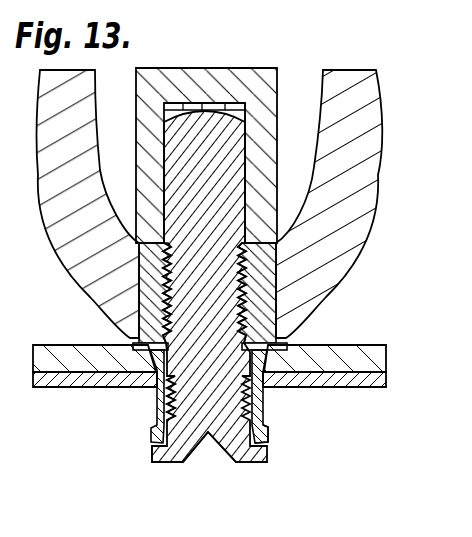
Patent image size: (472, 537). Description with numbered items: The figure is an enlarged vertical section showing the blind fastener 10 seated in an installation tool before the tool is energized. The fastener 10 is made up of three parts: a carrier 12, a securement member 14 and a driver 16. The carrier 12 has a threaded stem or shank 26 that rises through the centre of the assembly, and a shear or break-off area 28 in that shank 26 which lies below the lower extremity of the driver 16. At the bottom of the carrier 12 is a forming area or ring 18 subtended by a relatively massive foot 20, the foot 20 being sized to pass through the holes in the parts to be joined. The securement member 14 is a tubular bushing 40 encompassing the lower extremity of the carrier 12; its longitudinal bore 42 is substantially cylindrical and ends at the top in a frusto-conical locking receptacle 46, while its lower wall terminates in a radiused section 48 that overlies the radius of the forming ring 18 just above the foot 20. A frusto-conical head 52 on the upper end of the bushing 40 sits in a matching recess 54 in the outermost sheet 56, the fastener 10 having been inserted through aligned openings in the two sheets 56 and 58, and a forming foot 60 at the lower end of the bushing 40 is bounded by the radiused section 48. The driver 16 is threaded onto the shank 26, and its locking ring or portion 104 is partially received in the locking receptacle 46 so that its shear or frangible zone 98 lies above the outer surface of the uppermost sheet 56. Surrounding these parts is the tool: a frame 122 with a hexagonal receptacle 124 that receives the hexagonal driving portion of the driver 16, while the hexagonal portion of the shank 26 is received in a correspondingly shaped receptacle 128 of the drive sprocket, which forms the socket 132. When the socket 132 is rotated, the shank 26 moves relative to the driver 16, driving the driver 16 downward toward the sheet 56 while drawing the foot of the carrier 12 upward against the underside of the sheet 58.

The blind fastener 10 is at (283, 445).
The carrier 12 is at (236, 113).
The securement member 14 is at (147, 409).
The driver 16 is at (281, 302).
The forming area or ring 18 is at (269, 438).
The foot 20 is at (200, 463).
The shank 26 is at (197, 107).
The shear or break-off area 28 is at (148, 388).
The tubular bushing 40 is at (266, 410).
The longitudinal bore 42 is at (174, 441).
The locking receptacle 46 is at (313, 388).
The radiused section 48 is at (154, 463).
The frusto-conical head 52 is at (290, 343).
The receptacle or recess 54 is at (137, 363).
The outermost sheet 56 is at (386, 357).
The sheet 58 is at (386, 382).
The forming foot 60 is at (239, 463).
The shear or frangible zone 98 is at (141, 346).
The locking ring or portion 104 is at (268, 343).
The frame 122 is at (363, 222).
The hexagonal receptacle 124 is at (273, 285).
The receptacle 128 is at (242, 168).
The socket 132 is at (155, 78).